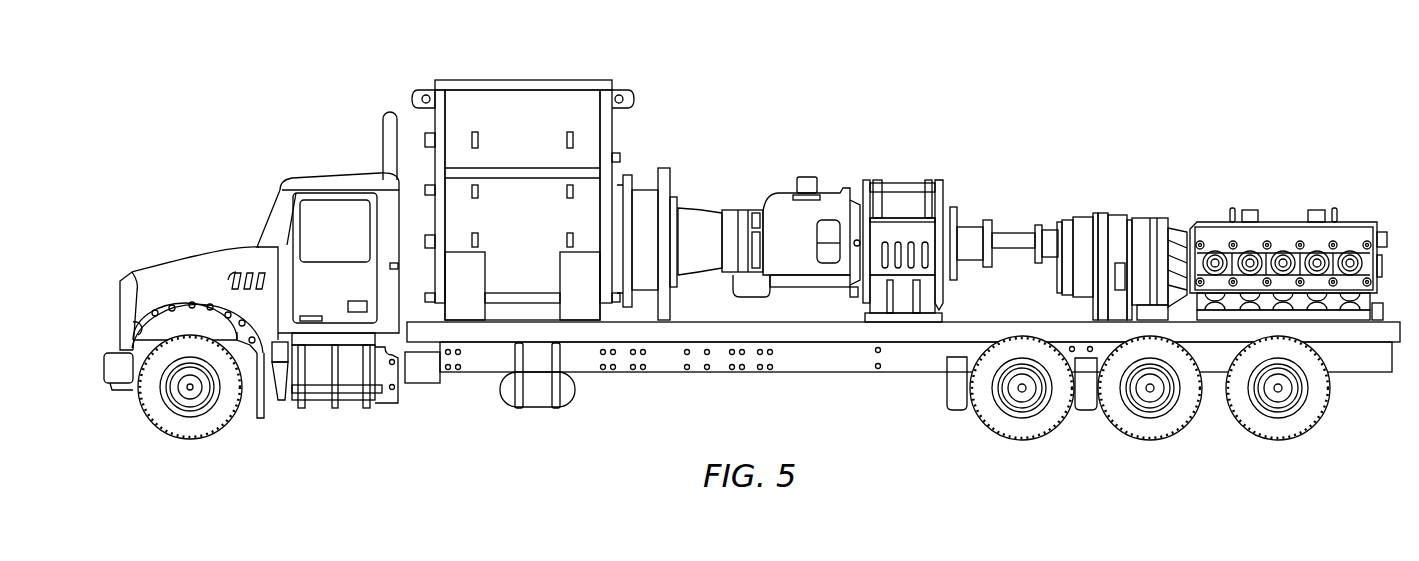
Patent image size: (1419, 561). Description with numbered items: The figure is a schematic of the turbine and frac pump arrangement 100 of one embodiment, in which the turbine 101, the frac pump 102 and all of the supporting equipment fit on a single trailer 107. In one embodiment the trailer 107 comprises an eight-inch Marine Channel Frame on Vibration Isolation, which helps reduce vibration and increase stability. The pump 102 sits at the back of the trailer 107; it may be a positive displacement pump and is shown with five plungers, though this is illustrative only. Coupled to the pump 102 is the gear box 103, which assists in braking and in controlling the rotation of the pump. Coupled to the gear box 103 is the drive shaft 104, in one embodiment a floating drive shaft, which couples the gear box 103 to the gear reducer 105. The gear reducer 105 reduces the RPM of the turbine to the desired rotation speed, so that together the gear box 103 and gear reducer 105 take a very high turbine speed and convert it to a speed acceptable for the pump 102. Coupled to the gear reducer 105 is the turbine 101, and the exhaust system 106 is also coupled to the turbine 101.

The hydraulic fracturing system / truck-mounted pumping unit 100 is at (270, 78).
The turbine 101 is at (767, 203).
The frac pump 102 is at (1280, 218).
The gear box 103 is at (1078, 215).
The drive shaft 104 is at (1013, 230).
The gear reducer 105 is at (908, 180).
The exhaust system 106 is at (552, 78).
The trailer 107 is at (663, 372).